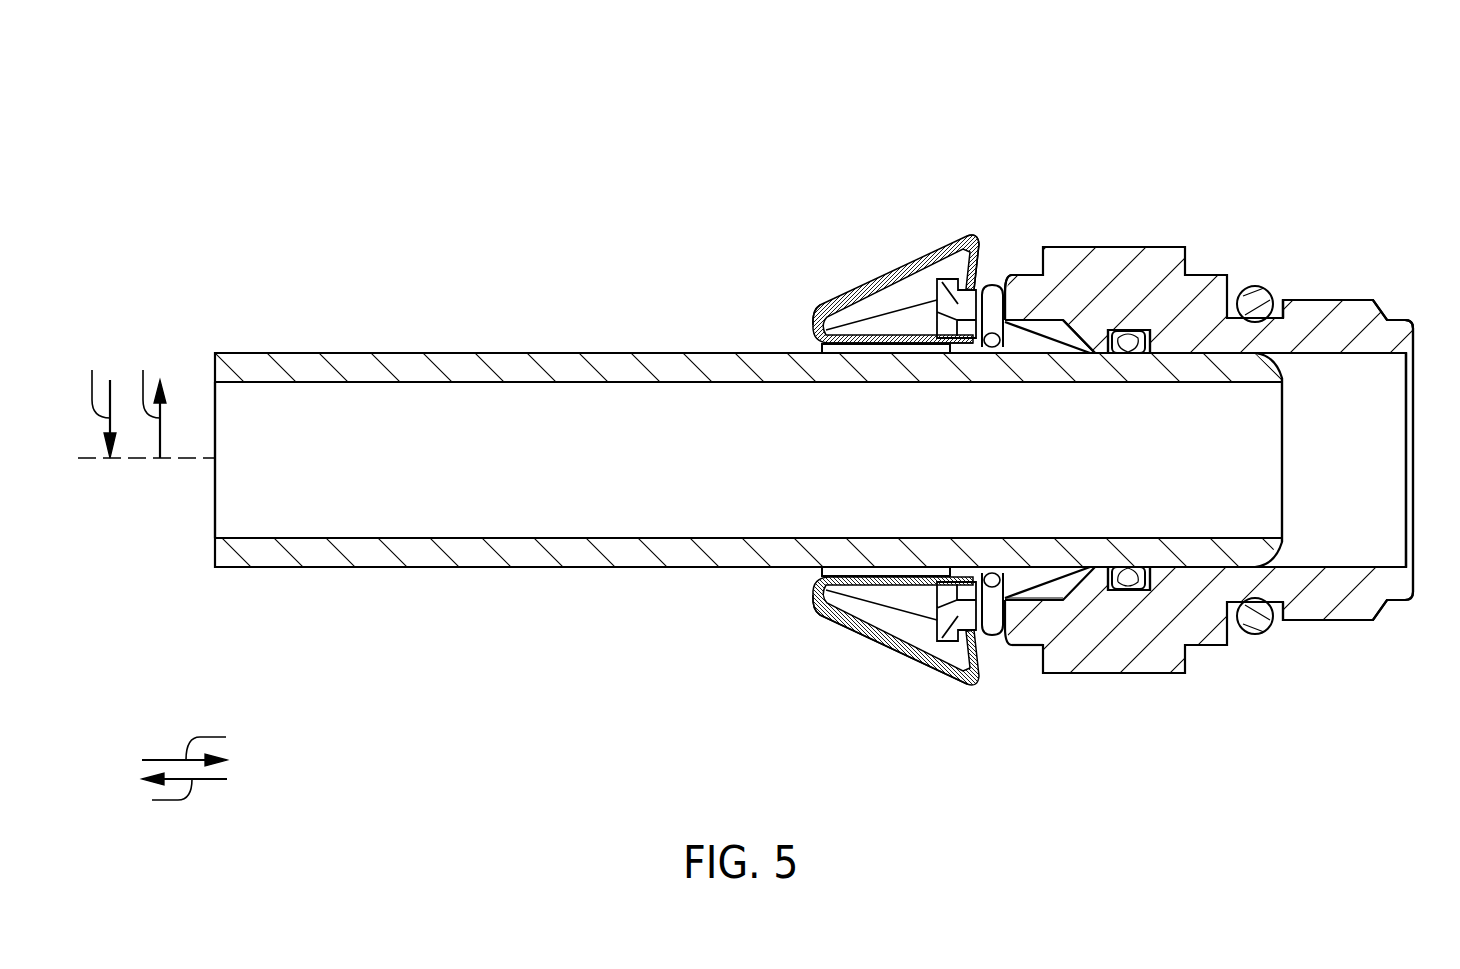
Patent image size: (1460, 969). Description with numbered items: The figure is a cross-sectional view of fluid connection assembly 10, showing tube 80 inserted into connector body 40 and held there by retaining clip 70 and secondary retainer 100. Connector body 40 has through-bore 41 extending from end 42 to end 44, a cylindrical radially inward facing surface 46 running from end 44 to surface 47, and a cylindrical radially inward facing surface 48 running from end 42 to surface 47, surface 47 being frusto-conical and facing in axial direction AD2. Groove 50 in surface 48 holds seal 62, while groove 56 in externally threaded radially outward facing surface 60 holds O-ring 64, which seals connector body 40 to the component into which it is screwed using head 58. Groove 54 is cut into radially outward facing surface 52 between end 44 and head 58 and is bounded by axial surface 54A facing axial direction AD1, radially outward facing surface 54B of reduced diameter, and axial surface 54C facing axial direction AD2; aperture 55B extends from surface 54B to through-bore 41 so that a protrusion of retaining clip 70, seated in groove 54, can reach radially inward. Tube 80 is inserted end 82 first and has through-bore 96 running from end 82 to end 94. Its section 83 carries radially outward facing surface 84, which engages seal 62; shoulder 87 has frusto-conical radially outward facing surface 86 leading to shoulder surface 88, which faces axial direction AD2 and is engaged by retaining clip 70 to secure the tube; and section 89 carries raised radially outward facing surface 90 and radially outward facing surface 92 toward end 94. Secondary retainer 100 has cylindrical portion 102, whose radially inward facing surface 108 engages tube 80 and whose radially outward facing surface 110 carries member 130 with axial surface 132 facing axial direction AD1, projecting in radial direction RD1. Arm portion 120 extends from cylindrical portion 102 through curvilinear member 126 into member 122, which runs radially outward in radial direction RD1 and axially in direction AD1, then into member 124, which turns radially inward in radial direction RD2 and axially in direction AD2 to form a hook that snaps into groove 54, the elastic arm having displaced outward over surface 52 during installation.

The fluid connection assembly 10 is at (422, 97).
The connector body 40 is at (1355, 330).
The through-bore 41 is at (1390, 467).
The end 42 is at (1416, 338).
The end 44 is at (882, 645).
The radially inward facing surface 46 is at (1047, 298).
The surface 47 is at (1100, 600).
The radially inward facing surface 48 is at (1337, 568).
The groove 50 is at (1128, 330).
The radially outward facing surface 52 is at (1030, 648).
The groove 54 is at (997, 664).
The axial surface 54A is at (940, 636).
The radially outward facing surface 54B is at (985, 648).
The axial surface 54C is at (1058, 675).
The aperture 55B is at (1013, 297).
The groove 56 is at (1284, 310).
The head 58 is at (1172, 247).
The radially outward facing surface 60 is at (1335, 320).
The seal 62 is at (1136, 335).
The O-ring 64 is at (1250, 290).
The retaining clip 70 is at (996, 288).
The tube 80 is at (277, 353).
The end 82 is at (1285, 400).
The section 83 is at (1203, 605).
The radially outward facing surface 84 is at (1175, 355).
The radially outward facing surface 86 is at (1078, 352).
The shoulder 87 is at (1025, 355).
The shoulder surface 88 is at (992, 345).
The section 89 is at (399, 644).
The radially outward facing surface 90 is at (960, 348).
The radially outward facing surface 92 is at (368, 353).
The end 94 is at (215, 565).
The through-bore 96 is at (235, 449).
The secondary retainer 100 is at (838, 608).
The cylindrical portion 102 is at (840, 353).
The radially inward facing surface 108 is at (895, 570).
The radially outward facing surface 110 is at (840, 584).
The arm portion 120 is at (855, 292).
The member 122 is at (913, 265).
The member 124 is at (982, 262).
The curvilinear member 126 is at (813, 322).
The member 130 is at (985, 580).
The axial surface 132 is at (1045, 582).
The radial direction RD1 is at (145, 396).
The radial direction RD2 is at (94, 396).
The axial direction AD1 is at (204, 739).
The axial direction AD2 is at (170, 797).